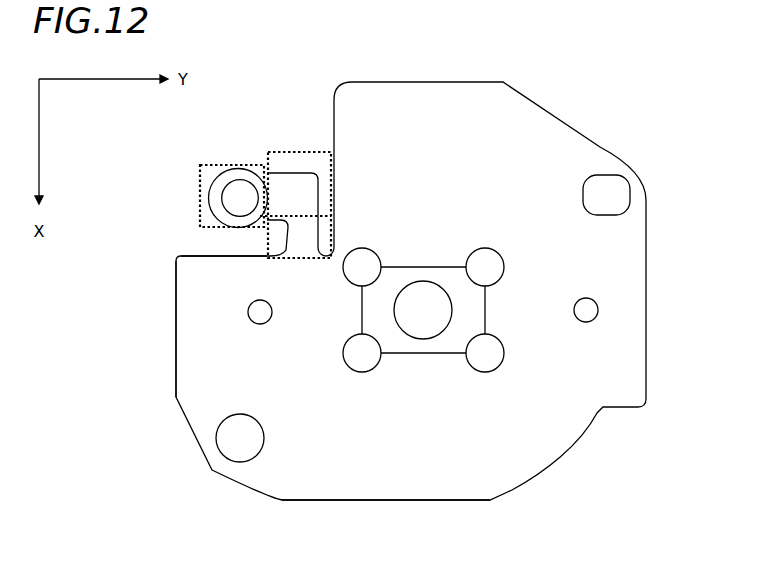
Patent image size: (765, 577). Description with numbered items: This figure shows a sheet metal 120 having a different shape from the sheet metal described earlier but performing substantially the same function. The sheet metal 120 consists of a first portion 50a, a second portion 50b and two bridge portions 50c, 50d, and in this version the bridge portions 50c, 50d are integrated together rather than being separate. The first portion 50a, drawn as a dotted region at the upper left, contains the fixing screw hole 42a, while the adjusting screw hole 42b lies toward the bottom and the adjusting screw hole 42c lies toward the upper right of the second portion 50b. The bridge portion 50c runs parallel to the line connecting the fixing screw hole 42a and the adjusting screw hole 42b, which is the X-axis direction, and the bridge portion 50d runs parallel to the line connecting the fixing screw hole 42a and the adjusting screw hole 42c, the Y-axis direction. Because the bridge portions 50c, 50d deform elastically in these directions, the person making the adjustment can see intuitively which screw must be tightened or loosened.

The sheet metal 120 is at (139, 401).
The fixing screw hole 42a is at (235, 198).
The adjusting screw hole 42b is at (239, 445).
The adjusting screw hole 42c is at (603, 204).
The first portion 50a is at (200, 223).
The second portion 50b is at (425, 462).
The bridge portion 50c is at (262, 240).
The bridge portion 50d is at (287, 153).